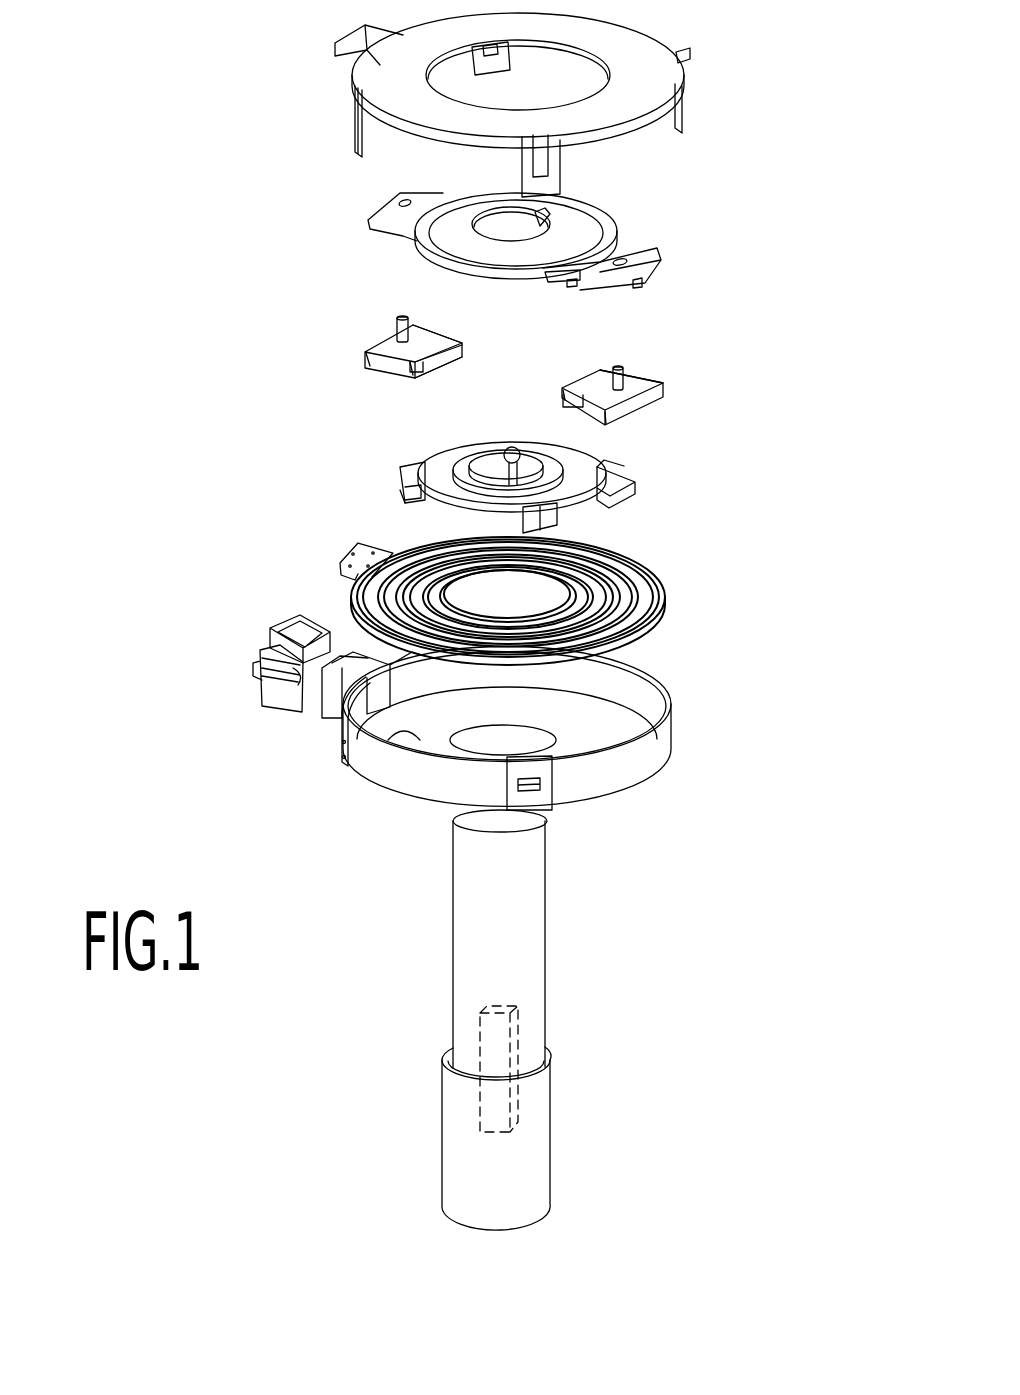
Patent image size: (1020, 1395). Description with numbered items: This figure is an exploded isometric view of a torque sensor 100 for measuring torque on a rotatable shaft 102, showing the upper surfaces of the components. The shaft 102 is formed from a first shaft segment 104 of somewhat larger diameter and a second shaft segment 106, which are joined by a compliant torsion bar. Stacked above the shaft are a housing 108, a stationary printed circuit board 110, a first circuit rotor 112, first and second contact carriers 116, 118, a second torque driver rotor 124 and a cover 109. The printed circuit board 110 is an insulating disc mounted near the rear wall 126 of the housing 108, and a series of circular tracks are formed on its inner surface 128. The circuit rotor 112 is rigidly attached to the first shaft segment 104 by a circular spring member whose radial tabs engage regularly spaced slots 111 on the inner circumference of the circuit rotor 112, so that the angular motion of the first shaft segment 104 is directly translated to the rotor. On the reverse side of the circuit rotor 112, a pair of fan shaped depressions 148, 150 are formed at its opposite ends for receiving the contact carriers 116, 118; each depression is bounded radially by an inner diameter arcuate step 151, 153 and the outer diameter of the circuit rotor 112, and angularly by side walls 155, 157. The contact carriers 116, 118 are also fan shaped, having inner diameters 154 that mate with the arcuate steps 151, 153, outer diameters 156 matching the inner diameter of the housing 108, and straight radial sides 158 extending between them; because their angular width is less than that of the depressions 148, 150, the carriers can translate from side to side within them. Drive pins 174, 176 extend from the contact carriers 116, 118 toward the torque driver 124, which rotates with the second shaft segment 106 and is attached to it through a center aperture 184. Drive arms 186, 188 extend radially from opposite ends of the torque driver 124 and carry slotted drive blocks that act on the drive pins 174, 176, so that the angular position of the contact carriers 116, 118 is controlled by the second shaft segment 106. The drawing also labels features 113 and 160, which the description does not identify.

The torque sensor 100 is at (180, 422).
The rotatable shaft 102 is at (624, 998).
The first shaft segment 104 is at (440, 1153).
The second shaft segment 106 is at (545, 922).
The housing 108 is at (673, 727).
The cover 109 is at (683, 52).
The stationary printed circuit board 110 is at (672, 580).
The slots 111 is at (513, 455).
The circuit rotor 112 is at (427, 510).
The arm 113 is at (398, 471).
The first contact carrier 116 is at (597, 380).
The second contact carrier 118 is at (388, 338).
The torque driver 124 is at (372, 222).
The rear wall 126 is at (392, 736).
The inner surface 128 is at (353, 582).
The fan shaped depression 148 is at (425, 447).
The fan shaped depression 150 is at (636, 469).
The inner diameter arcuate step 151 is at (567, 500).
The inner diameter arcuate step 153 is at (423, 453).
The inner diameter 154 is at (430, 357).
The side wall 155 is at (603, 467).
The outer diameter 156 is at (383, 345).
The side wall 157 is at (463, 443).
The straight radial sides 158 is at (430, 335).
The notch 160 is at (410, 377).
The drive pin 174 is at (621, 367).
The drive pin 176 is at (425, 323).
The center aperture 184 is at (538, 232).
The drive arm 186 is at (640, 252).
The drive arm 188 is at (432, 190).